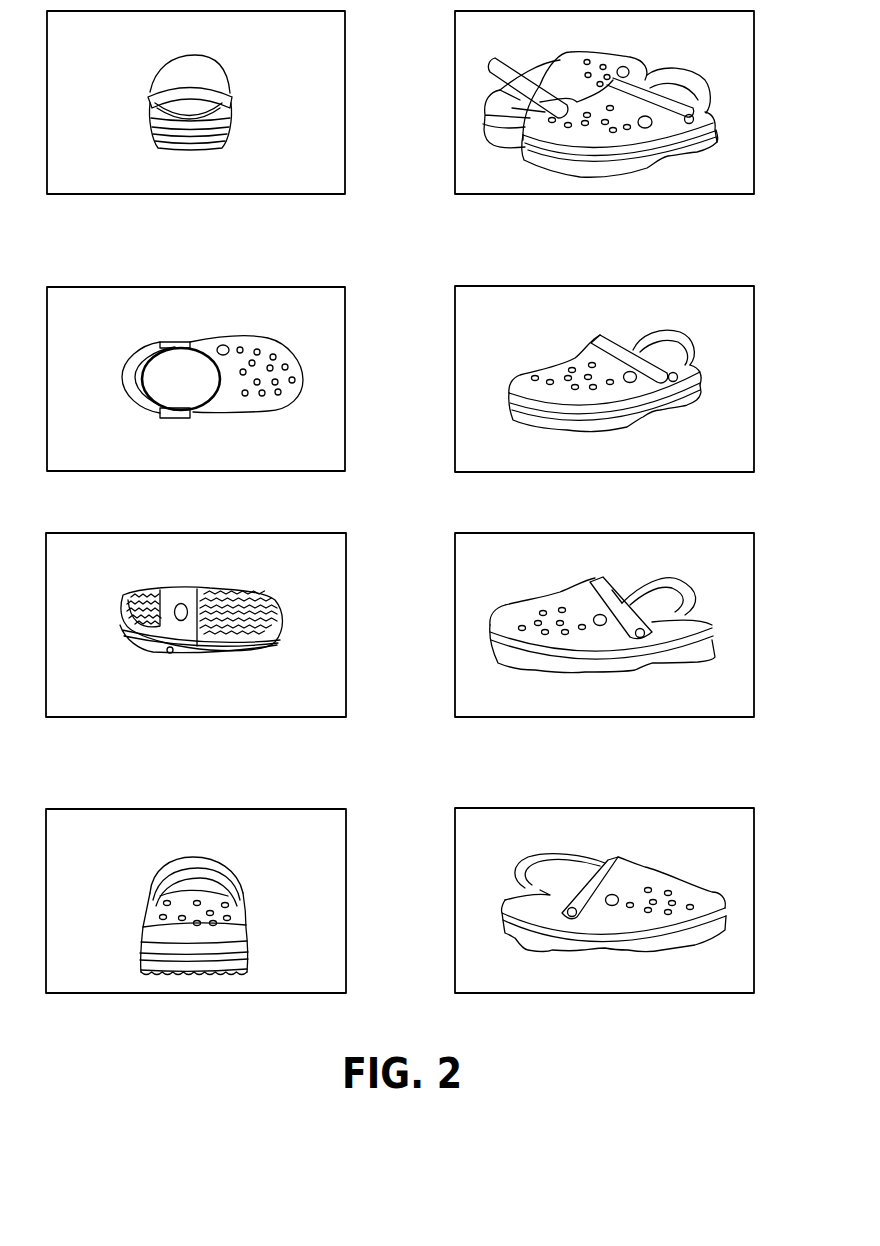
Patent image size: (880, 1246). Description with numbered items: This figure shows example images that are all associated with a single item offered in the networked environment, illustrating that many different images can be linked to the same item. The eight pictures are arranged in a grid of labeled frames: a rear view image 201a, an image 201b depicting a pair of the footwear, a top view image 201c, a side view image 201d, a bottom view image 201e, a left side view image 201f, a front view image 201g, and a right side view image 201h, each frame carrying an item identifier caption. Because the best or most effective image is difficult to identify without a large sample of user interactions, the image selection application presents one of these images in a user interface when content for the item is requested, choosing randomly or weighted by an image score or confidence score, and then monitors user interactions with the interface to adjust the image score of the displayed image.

The image 201a is at (182, 173).
The image 201b is at (680, 173).
The image 201c is at (322, 441).
The image 201d is at (508, 452).
The image 201e is at (323, 636).
The image 201f is at (642, 697).
The image 201g is at (308, 867).
The image 201h is at (678, 973).